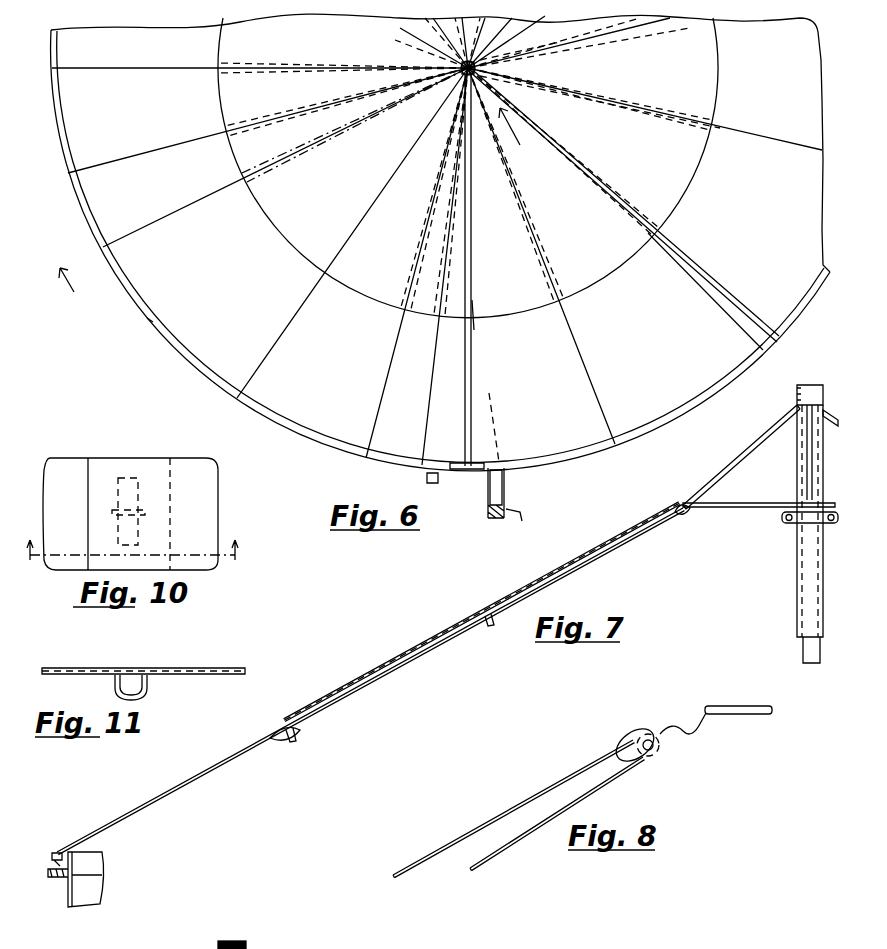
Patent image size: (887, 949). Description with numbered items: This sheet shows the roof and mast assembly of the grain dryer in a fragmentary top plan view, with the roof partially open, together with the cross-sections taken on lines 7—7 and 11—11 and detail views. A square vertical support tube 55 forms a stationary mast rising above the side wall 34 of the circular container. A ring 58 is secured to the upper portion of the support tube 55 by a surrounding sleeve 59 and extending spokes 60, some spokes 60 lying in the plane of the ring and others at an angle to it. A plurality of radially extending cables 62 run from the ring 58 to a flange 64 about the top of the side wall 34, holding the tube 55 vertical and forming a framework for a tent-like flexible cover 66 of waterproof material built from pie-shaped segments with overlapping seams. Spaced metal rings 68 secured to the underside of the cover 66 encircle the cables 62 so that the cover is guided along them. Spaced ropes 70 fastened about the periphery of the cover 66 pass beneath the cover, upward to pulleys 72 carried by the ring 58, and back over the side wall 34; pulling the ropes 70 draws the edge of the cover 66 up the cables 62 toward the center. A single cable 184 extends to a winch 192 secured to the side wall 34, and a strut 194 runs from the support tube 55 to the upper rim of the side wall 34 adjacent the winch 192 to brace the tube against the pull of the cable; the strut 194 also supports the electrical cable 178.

In FIG. 6, the side wall 34 is at (150, 318).
In FIG. 7, the side wall 34 is at (68, 895).
In FIG. 6, the vertical support tube 55 is at (450, 62).
In FIG. 7, the vertical support tube 55 is at (810, 386).
In FIG. 6, the ring 58 is at (540, 48).
In FIG. 7, the ring 58 is at (748, 508).
In FIG. 8, the ring 58 is at (748, 708).
In FIG. 7, the sleeve 59 is at (797, 598).
In FIG. 7, the spokes 60 is at (808, 443).
In FIG. 6, the cables 62 is at (130, 78).
In FIG. 7, the cables 62 is at (375, 684).
In FIG. 6, the flange 64 is at (160, 360).
In FIG. 7, the flange 64 is at (54, 852).
In FIG. 6, the flexible cover 66 is at (338, 198).
In FIG. 7, the flexible cover 66 is at (412, 653).
In FIG. 10, the flexible cover 66 is at (76, 470).
In FIG. 11, the flexible cover 66 is at (196, 666).
In FIG. 7, the metal rings 68 is at (488, 626).
In FIG. 10, the metal rings 68 is at (145, 515).
In FIG. 11, the metal rings 68 is at (150, 692).
In FIG. 6, the ropes 70 is at (222, 114).
In FIG. 8, the ropes 70 is at (493, 822).
In FIG. 8, the pulleys 72 is at (665, 757).
In FIG. 6, the electrical cable 178 is at (440, 474).
In FIG. 6, the cable 184 is at (498, 452).
In FIG. 6, the winch 192 is at (510, 510).
In FIG. 6, the strut 194 is at (478, 356).
In FIG. 6, the section line 7 is at (294, 216).
In FIG. 10, the section line 11 is at (132, 567).